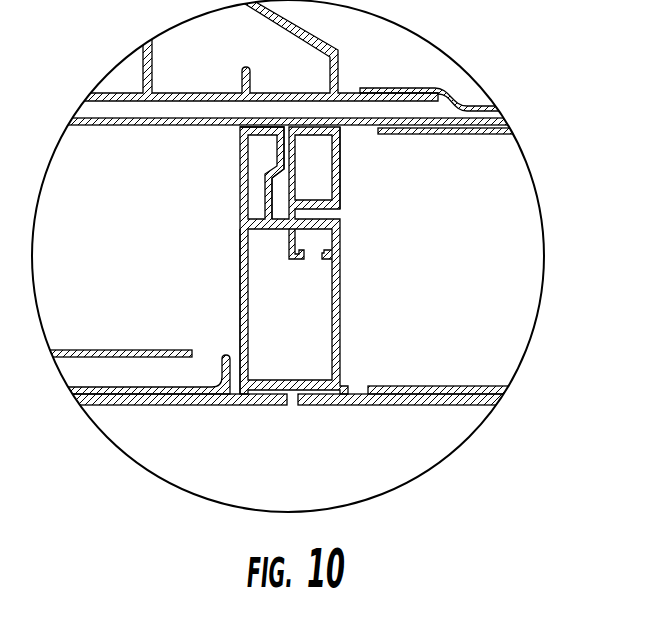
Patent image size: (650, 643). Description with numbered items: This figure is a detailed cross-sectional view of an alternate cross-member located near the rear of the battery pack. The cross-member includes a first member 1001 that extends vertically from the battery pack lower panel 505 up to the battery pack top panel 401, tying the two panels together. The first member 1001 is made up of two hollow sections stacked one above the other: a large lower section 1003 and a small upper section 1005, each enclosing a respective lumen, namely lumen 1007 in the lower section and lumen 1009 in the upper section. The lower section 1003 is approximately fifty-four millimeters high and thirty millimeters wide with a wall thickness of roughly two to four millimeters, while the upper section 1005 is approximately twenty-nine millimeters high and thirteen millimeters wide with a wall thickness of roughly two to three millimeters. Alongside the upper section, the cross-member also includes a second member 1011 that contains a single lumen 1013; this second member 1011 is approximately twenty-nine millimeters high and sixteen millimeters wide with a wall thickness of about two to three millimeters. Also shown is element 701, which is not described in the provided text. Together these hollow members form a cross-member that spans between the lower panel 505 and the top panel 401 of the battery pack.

The battery pack top panel 401 is at (212, 118).
The seal strip 701 is at (468, 104).
The lumen 1009 is at (261, 148).
The lumen 1013 is at (315, 168).
The small upper section 1005 is at (239, 198).
The second member 1011 is at (342, 179).
The first member 1001 is at (273, 260).
The large lower section 1003 is at (239, 298).
The lumen 1007 is at (312, 325).
The battery pack lower panel 505 is at (343, 405).